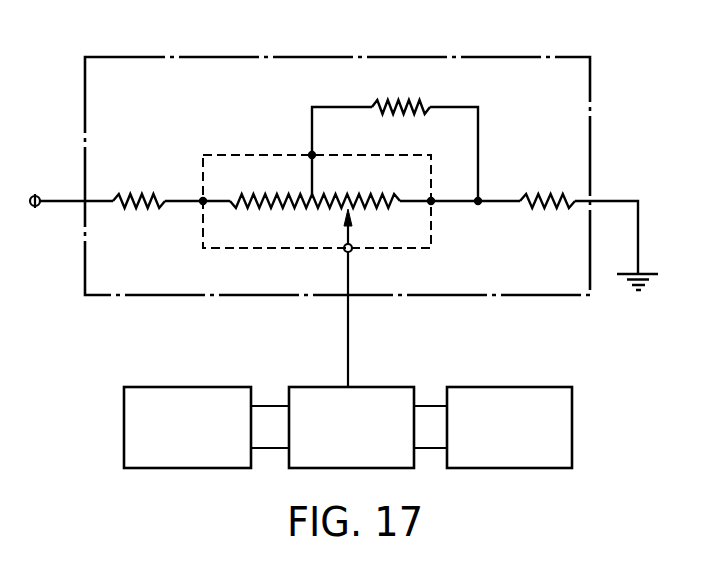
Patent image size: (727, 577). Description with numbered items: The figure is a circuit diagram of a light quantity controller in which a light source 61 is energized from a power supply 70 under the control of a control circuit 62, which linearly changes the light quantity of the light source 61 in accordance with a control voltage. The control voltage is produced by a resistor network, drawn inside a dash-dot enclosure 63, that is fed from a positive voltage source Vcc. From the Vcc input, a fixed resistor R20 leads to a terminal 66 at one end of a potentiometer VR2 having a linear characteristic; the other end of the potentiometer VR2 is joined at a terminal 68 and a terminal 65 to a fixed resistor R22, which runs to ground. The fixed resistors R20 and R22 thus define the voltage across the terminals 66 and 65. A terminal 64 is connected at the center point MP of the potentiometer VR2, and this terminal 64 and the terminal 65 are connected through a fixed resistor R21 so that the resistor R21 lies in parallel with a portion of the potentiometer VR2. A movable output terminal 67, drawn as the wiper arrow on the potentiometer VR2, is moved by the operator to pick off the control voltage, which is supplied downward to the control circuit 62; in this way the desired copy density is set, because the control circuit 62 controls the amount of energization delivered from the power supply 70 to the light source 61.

The light quantity control circuit 63 is at (495, 57).
The terminal 64 is at (341, 150).
The terminal 65 is at (493, 191).
The terminal 66 is at (187, 213).
The movable output terminal 67 is at (361, 315).
The terminal 68 is at (445, 191).
The power supply 70 is at (168, 387).
The control circuit 62 is at (375, 387).
The light source 61 is at (537, 387).
The fixed resistor R20 is at (140, 193).
The fixed resistor R21 is at (396, 98).
The fixed resistor R22 is at (543, 210).
The potentiometer VR2 is at (431, 232).
The center point of the potentiometer MP is at (335, 207).
The positive voltage source Vcc is at (66, 187).